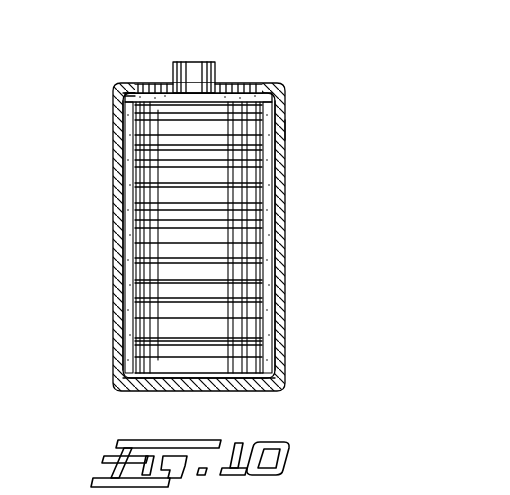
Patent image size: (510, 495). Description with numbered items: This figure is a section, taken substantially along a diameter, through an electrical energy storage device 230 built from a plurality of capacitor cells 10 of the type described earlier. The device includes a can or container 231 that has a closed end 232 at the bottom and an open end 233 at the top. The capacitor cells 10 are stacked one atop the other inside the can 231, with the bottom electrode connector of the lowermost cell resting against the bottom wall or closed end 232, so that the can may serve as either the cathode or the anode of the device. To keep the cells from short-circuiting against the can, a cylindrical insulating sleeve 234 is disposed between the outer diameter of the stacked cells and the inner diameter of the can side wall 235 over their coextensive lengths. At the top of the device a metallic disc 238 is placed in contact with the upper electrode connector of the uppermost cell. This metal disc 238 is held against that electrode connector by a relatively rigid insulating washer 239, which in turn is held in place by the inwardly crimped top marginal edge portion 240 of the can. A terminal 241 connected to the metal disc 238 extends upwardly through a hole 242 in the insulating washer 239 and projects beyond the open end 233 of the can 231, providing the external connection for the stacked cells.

The capacitor cells 10 is at (147, 178).
The energy storage device 230 is at (292, 130).
The can 231 is at (108, 279).
The closed end 232 is at (202, 387).
The open end 233 is at (168, 97).
The cylindrical insulating sleeve 234 is at (281, 222).
The can side wall 235 is at (283, 157).
The metallic disc 238 is at (232, 108).
The insulating washer 239 is at (125, 98).
The inwardly crimped top marginal edge portion 240 is at (137, 85).
The terminal 241 is at (198, 62).
The hole 242 is at (189, 96).